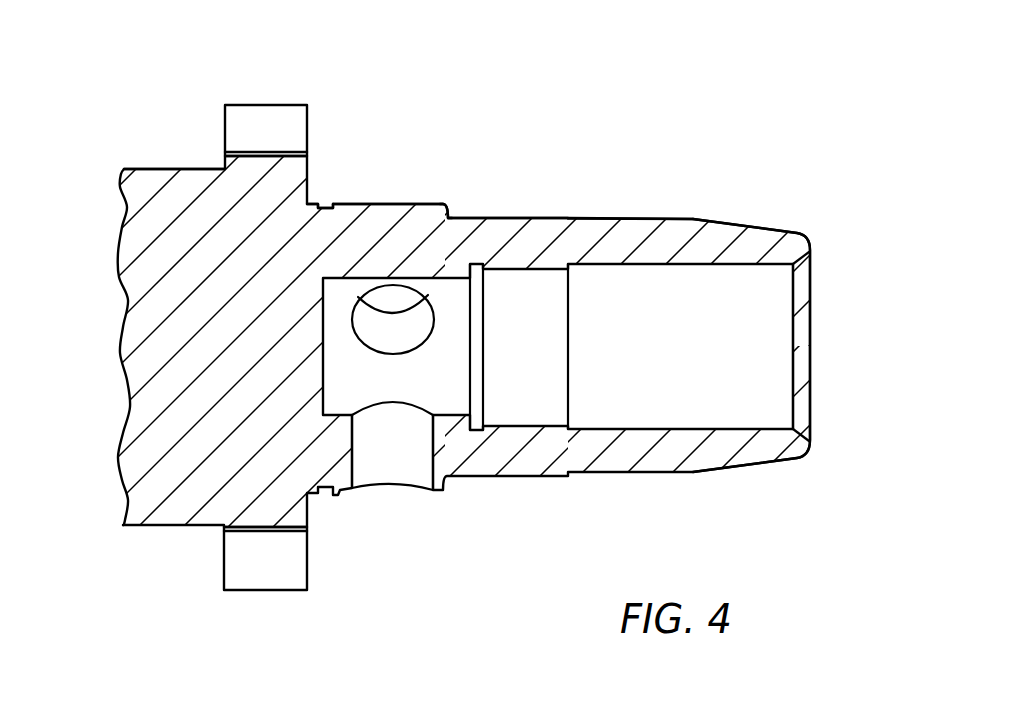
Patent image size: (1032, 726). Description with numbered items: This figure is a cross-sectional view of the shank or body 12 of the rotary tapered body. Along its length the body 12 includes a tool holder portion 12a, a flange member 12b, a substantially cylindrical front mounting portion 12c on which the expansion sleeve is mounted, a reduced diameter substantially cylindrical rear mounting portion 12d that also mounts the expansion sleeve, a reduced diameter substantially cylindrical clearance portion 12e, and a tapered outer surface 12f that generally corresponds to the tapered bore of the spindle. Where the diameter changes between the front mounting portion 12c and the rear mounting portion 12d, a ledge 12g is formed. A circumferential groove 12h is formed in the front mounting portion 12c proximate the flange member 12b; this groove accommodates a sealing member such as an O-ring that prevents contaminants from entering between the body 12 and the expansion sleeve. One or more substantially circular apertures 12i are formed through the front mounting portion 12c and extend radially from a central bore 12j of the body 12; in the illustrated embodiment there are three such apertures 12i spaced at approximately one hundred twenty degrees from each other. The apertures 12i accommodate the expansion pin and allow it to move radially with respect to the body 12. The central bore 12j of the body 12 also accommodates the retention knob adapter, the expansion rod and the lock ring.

The body 12 is at (141, 158).
The tool holder portion 12a is at (167, 167).
The flange member 12b is at (262, 103).
The front mounting portion 12c is at (382, 203).
The rear mounting portion 12d is at (513, 218).
The clearance portion 12e is at (648, 218).
The tapered outer surface 12f is at (772, 228).
The ledge 12g is at (448, 213).
The circumferential groove 12h is at (327, 203).
The apertures 12i is at (395, 337).
The central bore 12j is at (770, 338).